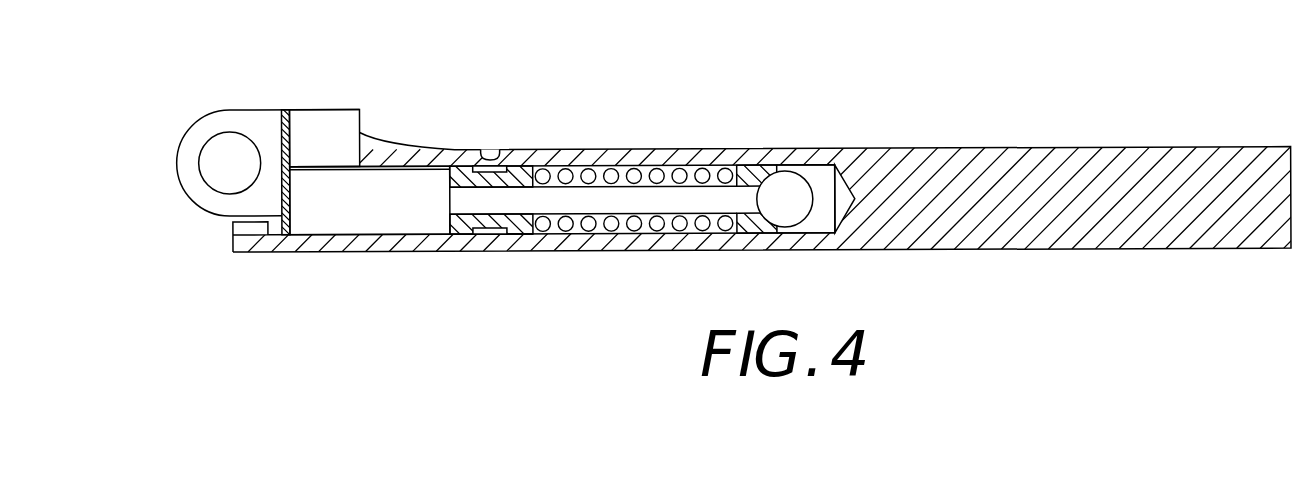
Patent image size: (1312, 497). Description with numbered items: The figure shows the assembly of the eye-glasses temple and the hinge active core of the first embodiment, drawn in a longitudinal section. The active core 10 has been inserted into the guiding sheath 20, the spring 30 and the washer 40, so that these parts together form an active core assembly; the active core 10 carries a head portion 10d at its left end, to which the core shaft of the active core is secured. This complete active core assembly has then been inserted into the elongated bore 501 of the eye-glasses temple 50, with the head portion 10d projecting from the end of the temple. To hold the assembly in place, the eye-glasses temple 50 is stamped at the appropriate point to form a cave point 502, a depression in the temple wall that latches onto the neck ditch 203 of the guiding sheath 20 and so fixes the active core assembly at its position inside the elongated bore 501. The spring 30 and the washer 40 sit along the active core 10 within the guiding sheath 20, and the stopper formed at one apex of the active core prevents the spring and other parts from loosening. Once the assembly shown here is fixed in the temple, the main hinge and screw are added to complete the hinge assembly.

The active core 10 is at (190, 122).
The head portion 10d is at (180, 189).
The guiding sheath 20 is at (361, 222).
The neck ditch 203 is at (474, 168).
The spring 30 is at (567, 229).
The washer 40 is at (757, 174).
The eye-glasses temple 50 is at (1086, 236).
The elongated bore 501 is at (819, 174).
The cave point 502 is at (489, 158).